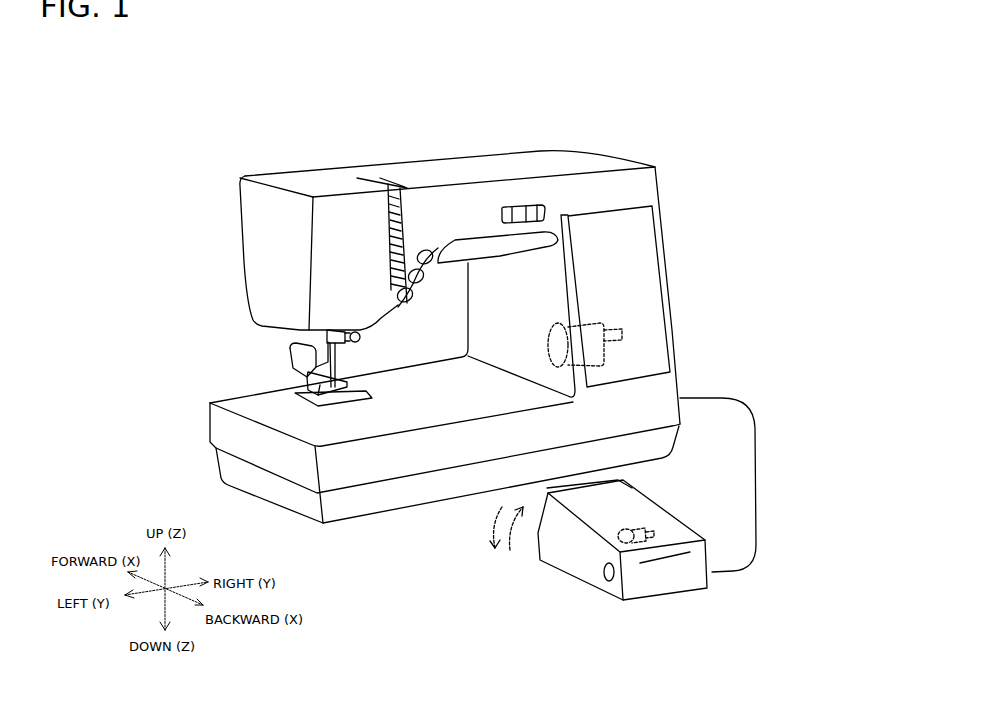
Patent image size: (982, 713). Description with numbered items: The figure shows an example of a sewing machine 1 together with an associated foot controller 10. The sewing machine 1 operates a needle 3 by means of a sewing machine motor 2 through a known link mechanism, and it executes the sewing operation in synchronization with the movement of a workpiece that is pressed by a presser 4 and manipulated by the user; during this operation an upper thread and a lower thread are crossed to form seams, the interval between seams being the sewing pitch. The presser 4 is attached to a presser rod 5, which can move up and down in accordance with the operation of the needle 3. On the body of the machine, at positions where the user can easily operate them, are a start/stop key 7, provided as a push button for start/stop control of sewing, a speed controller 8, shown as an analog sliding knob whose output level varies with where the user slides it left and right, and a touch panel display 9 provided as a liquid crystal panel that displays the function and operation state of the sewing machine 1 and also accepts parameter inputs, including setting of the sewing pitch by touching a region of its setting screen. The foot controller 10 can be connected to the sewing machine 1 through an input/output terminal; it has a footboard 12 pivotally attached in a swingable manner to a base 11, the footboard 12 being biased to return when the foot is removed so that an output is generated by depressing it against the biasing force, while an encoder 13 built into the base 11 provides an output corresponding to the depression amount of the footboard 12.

The sewing machine 1 is at (695, 137).
The sewing machine motor 2 is at (587, 327).
The needle 3 is at (343, 350).
The presser 4 is at (300, 375).
The presser rod 5 is at (327, 338).
The start/stop key 7 is at (431, 250).
The speed controller 8 is at (517, 205).
The touch panel display 9 is at (643, 220).
The foot controller 10 is at (718, 603).
The base 11 is at (567, 578).
The footboard 12 is at (633, 490).
The encoder 13 is at (636, 528).